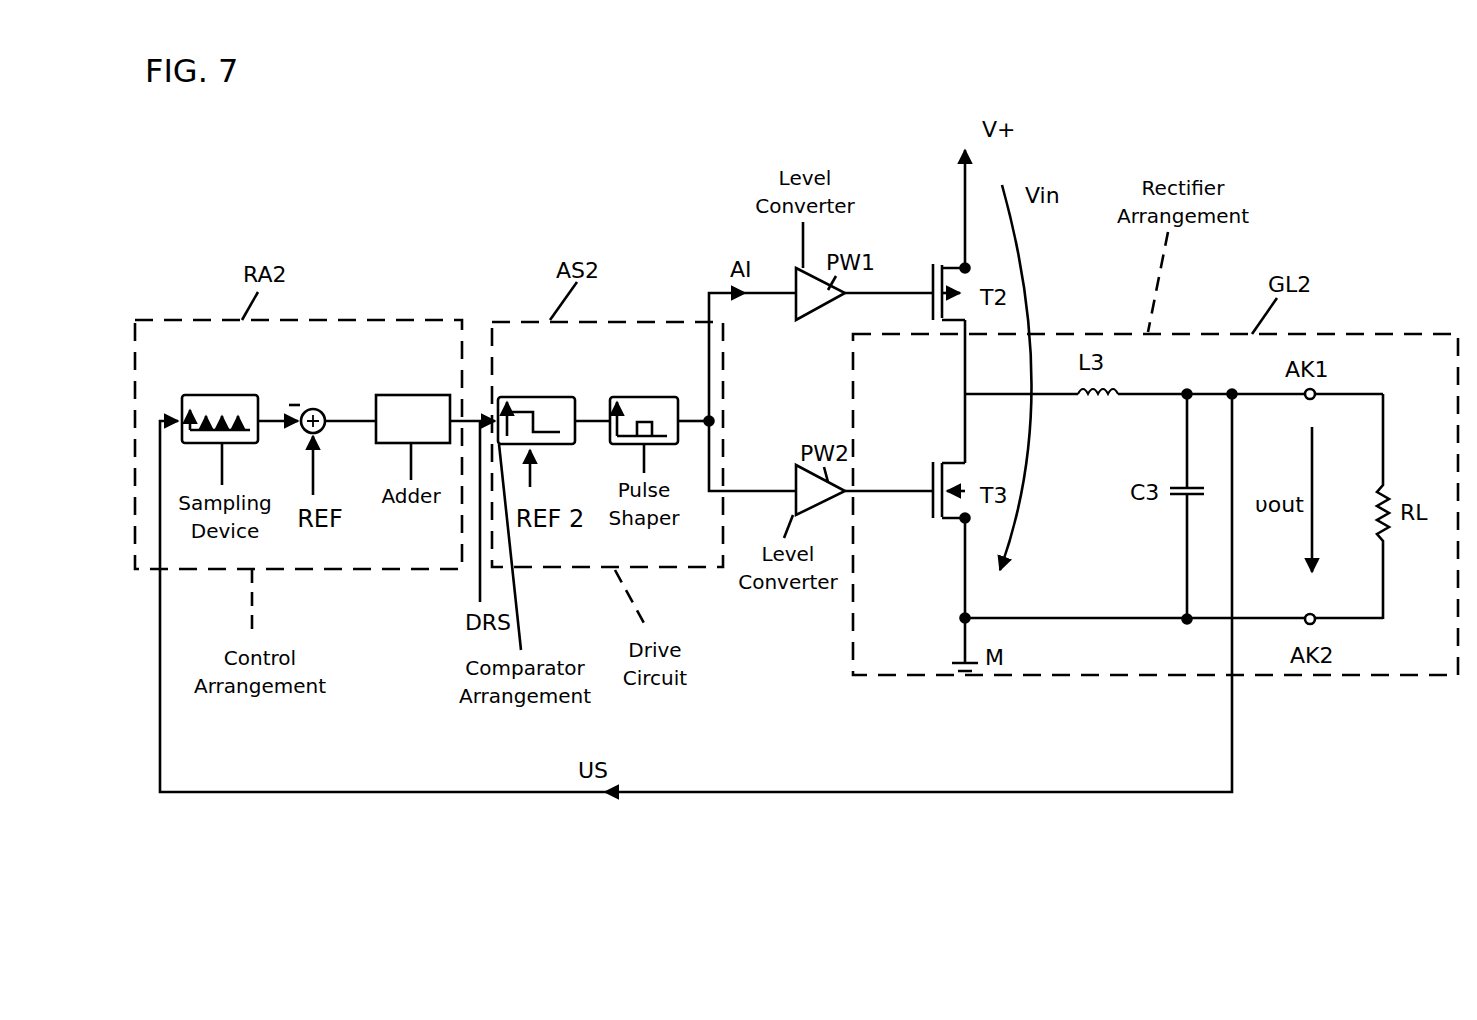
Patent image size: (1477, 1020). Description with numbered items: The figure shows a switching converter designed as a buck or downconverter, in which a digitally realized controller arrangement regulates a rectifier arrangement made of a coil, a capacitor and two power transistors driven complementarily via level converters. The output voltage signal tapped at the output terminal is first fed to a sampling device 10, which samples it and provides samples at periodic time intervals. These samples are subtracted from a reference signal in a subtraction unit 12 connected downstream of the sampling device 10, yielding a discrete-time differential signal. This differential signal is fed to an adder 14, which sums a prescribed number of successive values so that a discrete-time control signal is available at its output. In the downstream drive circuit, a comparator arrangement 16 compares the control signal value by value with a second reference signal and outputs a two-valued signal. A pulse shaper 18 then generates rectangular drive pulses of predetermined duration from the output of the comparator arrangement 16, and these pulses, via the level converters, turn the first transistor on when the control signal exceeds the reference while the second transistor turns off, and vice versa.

The sampling device 10 is at (203, 395).
The subtraction unit 12 is at (316, 408).
The adder 14 is at (398, 395).
The comparator arrangement 16 is at (517, 397).
The pulse shaper 18 is at (653, 397).